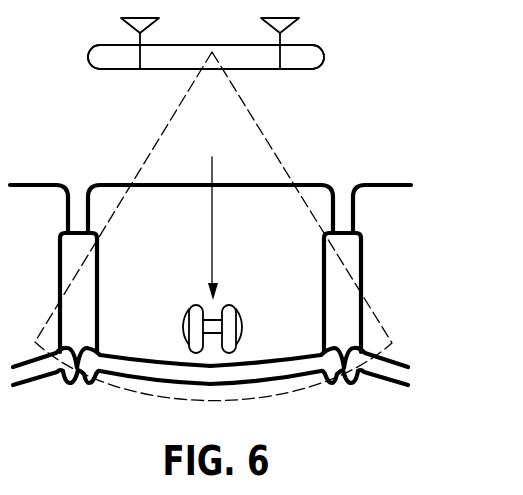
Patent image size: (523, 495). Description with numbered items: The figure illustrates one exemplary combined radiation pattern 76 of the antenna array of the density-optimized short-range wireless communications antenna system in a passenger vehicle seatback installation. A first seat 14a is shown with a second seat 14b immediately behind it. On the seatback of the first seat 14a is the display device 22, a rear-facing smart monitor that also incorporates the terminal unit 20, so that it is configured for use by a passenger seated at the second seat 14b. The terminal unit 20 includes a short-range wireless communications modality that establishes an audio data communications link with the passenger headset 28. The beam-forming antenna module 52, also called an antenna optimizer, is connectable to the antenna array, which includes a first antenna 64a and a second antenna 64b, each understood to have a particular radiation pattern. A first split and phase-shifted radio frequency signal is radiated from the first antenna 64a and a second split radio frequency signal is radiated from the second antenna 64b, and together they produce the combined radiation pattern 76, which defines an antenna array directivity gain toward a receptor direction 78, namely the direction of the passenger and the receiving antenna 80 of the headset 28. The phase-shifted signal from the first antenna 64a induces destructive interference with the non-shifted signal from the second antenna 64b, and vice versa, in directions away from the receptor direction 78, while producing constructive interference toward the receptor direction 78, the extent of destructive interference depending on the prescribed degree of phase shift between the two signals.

The first seat 14a is at (241, 58).
The second seat 14b is at (311, 193).
The terminal unit 20 is at (177, 78).
The display device 22 is at (206, 57).
The headset 28 is at (209, 327).
The beam-forming antenna module 52 is at (213, 43).
The first antenna 64a is at (124, 20).
The second antenna 64b is at (300, 20).
The combined radiation pattern 76 is at (258, 123).
The receptor direction 78 is at (212, 217).
The receiving antenna 80 is at (191, 313).